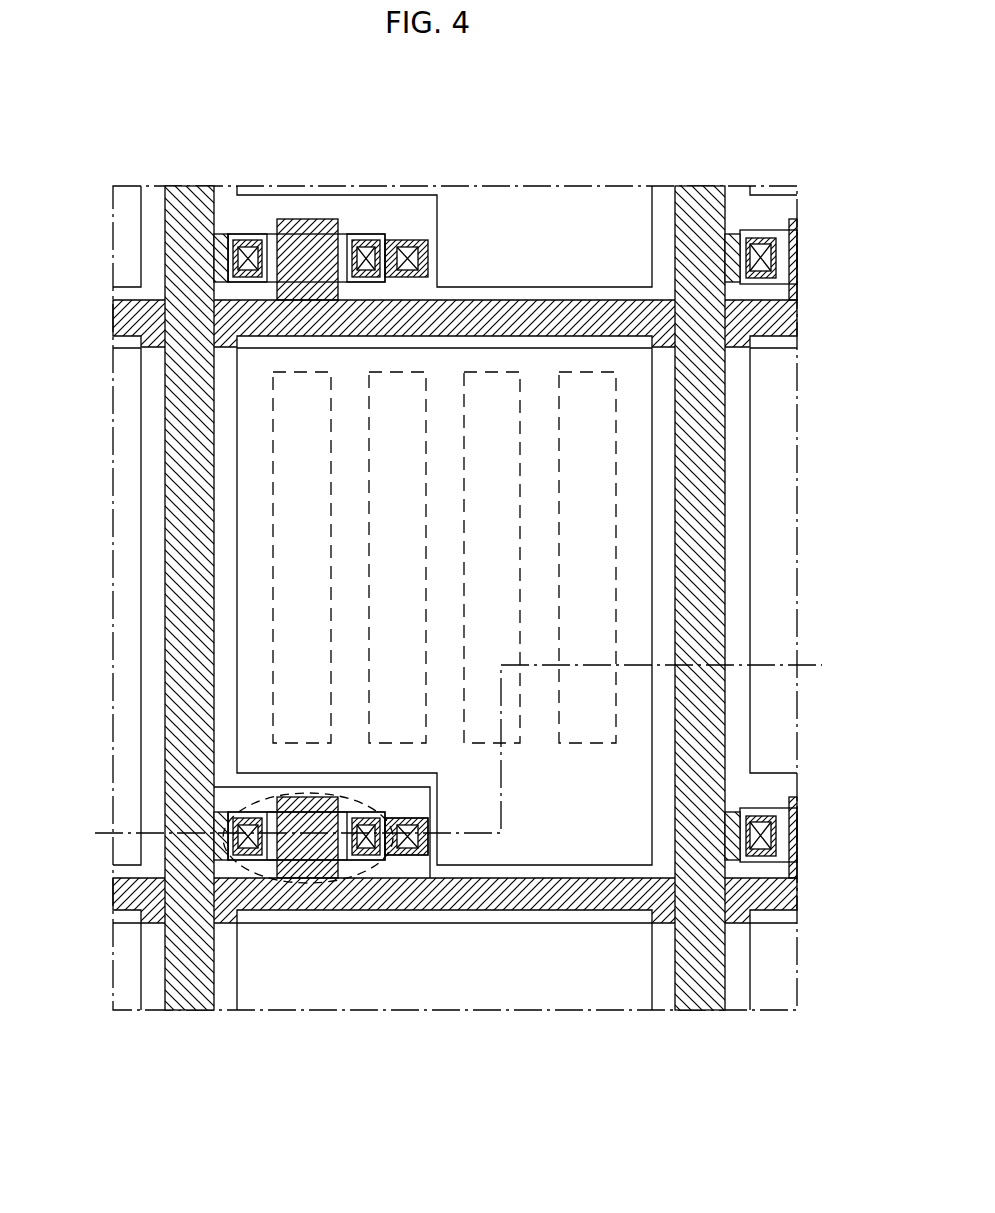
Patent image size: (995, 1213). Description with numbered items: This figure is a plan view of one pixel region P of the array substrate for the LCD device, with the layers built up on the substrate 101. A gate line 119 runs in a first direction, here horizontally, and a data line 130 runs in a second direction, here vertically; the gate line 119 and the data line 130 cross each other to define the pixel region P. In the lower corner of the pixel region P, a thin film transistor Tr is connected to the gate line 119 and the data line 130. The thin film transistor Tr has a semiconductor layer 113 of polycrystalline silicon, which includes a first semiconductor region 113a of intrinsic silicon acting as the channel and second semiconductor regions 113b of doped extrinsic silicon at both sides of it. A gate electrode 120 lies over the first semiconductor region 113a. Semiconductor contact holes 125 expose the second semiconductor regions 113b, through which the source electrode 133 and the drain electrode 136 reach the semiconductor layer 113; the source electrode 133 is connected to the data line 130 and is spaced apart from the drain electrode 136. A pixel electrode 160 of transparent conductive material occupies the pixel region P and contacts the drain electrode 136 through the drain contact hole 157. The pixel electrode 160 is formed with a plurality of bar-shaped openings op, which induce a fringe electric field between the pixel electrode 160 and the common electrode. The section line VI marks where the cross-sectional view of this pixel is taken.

The substrate 101 is at (692, 142).
The gate line 119 is at (527, 912).
The gate electrode 120 is at (312, 803).
The semiconductor layer 113 is at (317, 929).
The first semiconductor region 113a is at (318, 858).
The second semiconductor region 113b is at (271, 860).
The data line 130 is at (172, 491).
The source electrode 133 is at (236, 860).
The drain electrode 136 is at (418, 860).
The drain contact hole 157 is at (414, 829).
The semiconductor contact hole 125 is at (248, 834).
The thin film transistor Tr is at (373, 858).
The pixel electrode 160 is at (230, 446).
The opening op is at (318, 472).
The pixel region P is at (552, 503).
The section line VI- VI is at (95, 838).